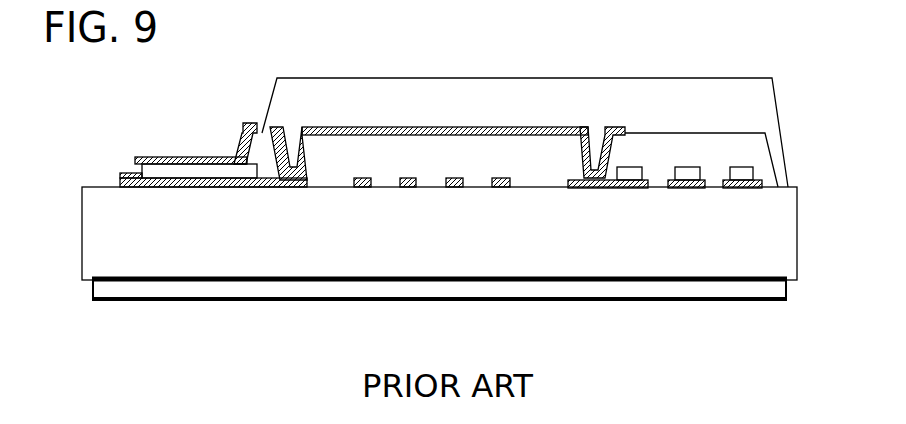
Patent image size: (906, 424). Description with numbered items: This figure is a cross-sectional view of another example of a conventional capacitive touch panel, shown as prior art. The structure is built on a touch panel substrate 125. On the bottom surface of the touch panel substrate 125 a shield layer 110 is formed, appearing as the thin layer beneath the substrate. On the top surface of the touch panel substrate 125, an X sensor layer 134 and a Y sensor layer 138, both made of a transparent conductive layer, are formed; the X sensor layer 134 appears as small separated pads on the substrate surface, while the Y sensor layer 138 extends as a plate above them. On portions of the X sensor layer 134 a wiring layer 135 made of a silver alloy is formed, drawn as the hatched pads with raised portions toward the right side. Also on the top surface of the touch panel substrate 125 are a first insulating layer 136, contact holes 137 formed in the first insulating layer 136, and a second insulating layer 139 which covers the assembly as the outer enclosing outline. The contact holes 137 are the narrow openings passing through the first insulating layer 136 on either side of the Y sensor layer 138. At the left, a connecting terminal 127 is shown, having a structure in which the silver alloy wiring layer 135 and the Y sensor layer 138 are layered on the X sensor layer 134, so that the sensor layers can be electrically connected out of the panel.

The shield layer 110 is at (533, 288).
The touch panel substrate 125 is at (426, 255).
The connecting terminal 127 is at (185, 156).
The X sensor layer 134 is at (362, 176).
The wiring layer 135 is at (683, 166).
The first insulating layer 136 is at (418, 150).
The contact holes 137 is at (290, 131).
The Y sensor layer 138 is at (488, 126).
The second insulating layer 139 is at (745, 105).